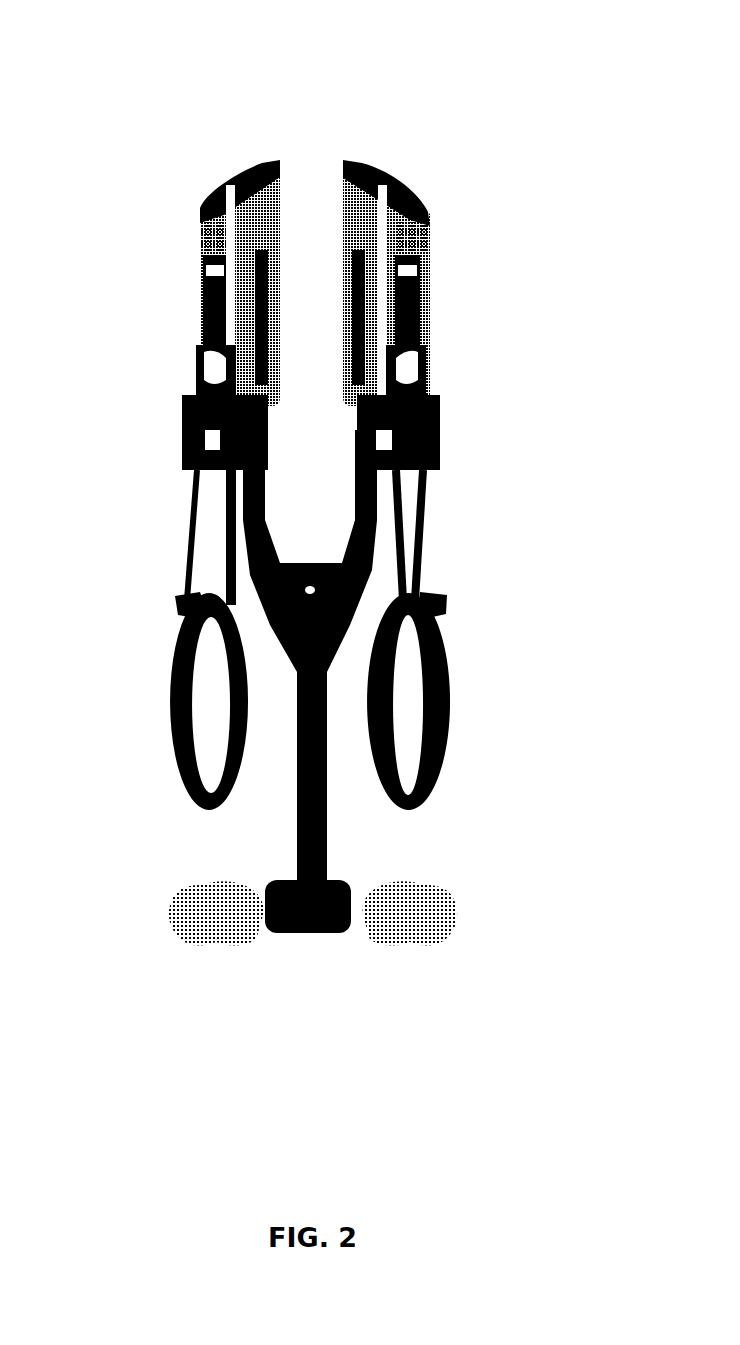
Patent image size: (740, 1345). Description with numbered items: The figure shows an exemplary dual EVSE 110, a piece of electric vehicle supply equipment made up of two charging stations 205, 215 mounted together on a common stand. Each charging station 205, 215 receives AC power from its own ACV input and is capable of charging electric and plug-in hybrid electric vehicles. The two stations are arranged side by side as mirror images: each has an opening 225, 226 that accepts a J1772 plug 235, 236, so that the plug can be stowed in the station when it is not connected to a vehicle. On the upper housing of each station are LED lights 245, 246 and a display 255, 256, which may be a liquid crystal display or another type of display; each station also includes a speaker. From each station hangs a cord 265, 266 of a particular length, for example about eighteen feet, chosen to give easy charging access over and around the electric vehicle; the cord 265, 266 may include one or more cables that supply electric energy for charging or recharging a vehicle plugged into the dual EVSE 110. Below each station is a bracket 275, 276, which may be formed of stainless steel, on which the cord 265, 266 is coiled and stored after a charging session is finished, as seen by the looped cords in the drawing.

The dual EVSE 110 is at (300, 74).
The charging station 205 is at (212, 185).
The charging station 215 is at (400, 180).
The LED lights 245 is at (202, 229).
The LED lights 246 is at (421, 229).
The display 255 is at (205, 266).
The display 256 is at (419, 268).
The opening 225 is at (203, 356).
The opening 226 is at (416, 359).
The J1772 plug 235 is at (185, 403).
The J1772 plug 236 is at (437, 412).
The bracket 275 is at (222, 573).
The bracket 276 is at (382, 575).
The cord 265 is at (165, 690).
The cord 266 is at (449, 690).